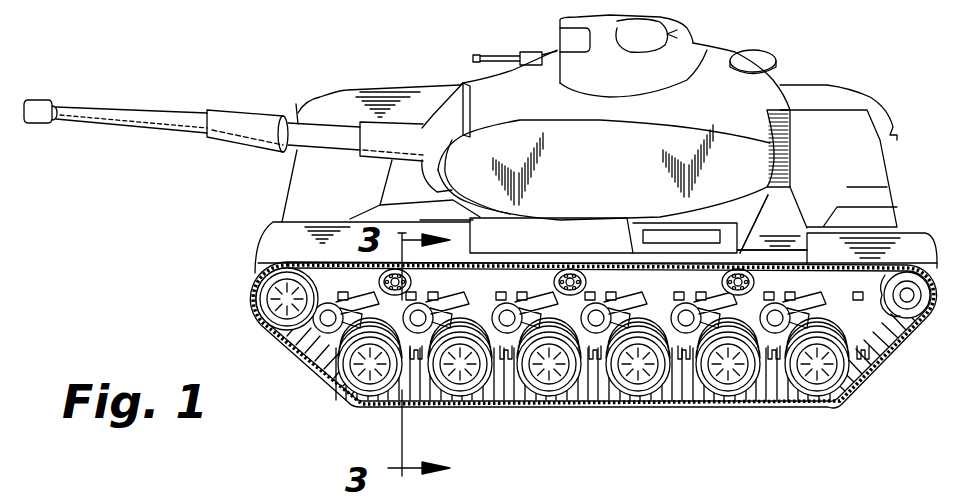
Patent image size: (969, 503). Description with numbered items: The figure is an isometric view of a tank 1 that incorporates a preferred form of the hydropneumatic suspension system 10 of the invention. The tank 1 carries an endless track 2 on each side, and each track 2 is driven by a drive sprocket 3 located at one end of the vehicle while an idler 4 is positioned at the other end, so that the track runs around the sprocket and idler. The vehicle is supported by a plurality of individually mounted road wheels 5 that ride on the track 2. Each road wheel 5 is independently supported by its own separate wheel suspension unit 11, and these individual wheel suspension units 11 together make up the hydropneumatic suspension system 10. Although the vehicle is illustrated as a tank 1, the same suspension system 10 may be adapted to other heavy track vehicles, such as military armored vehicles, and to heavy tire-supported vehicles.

The tank 1 is at (432, 78).
The endless track 2 is at (510, 393).
The drive sprocket 3 is at (920, 312).
The idler 4 is at (270, 296).
The road wheels 5 is at (360, 384).
The hydropneumatic suspension system 10 is at (753, 244).
The wheel suspension units 11 is at (604, 293).